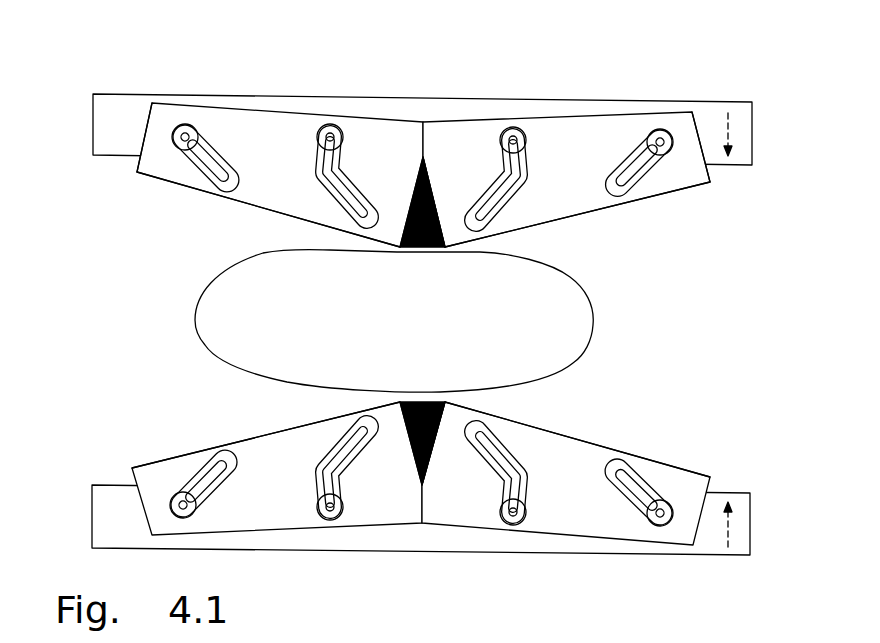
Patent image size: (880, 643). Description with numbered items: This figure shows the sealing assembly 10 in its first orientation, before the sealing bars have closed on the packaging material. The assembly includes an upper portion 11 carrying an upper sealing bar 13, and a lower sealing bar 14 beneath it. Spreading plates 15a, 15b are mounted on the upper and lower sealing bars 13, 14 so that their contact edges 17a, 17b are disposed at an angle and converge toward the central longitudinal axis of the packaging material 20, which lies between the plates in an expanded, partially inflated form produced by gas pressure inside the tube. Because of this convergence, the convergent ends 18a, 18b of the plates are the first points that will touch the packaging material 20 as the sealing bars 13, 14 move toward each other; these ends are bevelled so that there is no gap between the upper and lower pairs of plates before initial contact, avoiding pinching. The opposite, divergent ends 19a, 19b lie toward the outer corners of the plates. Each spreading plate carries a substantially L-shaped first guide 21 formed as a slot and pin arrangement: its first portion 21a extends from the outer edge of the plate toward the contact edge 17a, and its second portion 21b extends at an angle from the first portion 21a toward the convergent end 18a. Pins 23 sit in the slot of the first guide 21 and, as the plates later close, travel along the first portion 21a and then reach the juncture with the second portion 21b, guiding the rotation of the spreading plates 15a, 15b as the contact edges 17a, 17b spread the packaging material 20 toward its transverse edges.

The sealing assembly 10 is at (150, 312).
The upper portion 11 is at (728, 100).
The upper sealing bar 13 is at (275, 100).
The lower sealing bar 14 is at (410, 548).
The spreading plate 15a is at (167, 178).
The spreading plate 15b is at (687, 182).
The contact edge 17a is at (253, 207).
The contact edge 17b is at (597, 210).
The convergent end 18a is at (394, 244).
The convergent end 18b is at (452, 244).
The divergent end 19a is at (142, 172).
The divergent end 19b is at (708, 182).
The packaging material 20 is at (593, 327).
The first guide 21 is at (329, 118).
The first portion 21a is at (369, 177).
The second portion 21b is at (305, 173).
The pins 23 is at (330, 522).